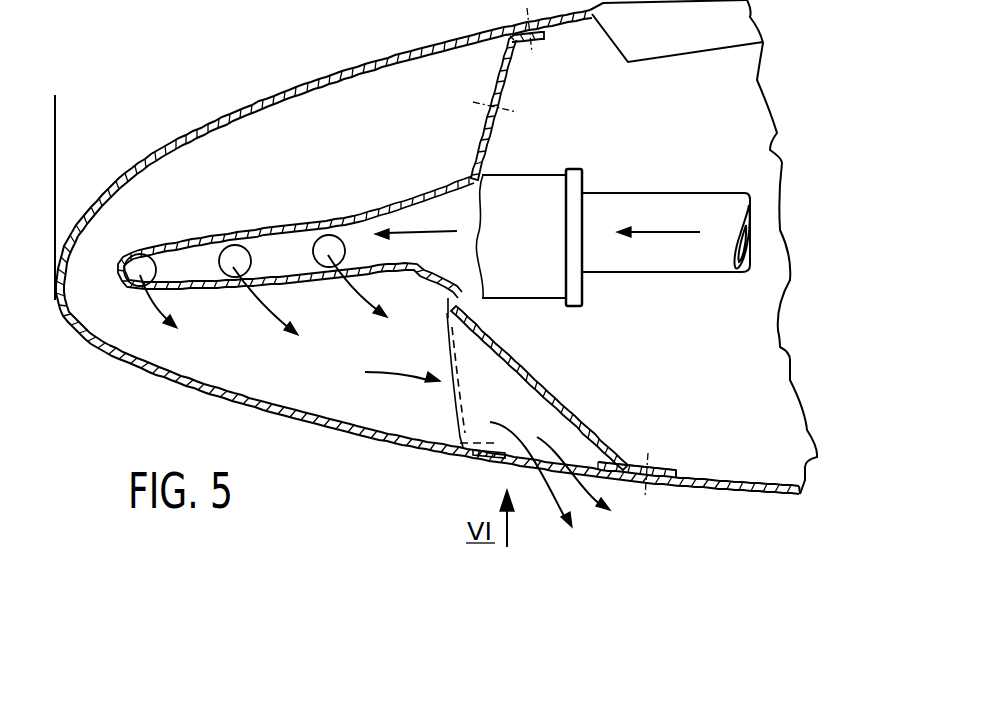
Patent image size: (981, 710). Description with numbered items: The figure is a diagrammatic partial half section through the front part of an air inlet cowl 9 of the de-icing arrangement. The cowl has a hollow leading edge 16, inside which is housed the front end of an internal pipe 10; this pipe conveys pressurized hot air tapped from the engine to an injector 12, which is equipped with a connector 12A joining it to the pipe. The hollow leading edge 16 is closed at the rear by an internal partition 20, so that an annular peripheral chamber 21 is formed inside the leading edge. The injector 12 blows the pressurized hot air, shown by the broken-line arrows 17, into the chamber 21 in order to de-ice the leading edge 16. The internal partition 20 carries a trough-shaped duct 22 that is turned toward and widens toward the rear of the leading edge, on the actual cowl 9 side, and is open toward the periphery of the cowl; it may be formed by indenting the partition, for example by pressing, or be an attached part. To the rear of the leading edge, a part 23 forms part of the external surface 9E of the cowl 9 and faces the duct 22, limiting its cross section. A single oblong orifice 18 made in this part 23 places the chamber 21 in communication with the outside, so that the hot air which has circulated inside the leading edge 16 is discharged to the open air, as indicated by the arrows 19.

The air inlet cowl 9 is at (727, 488).
The external surface 9E is at (770, 503).
The internal pipe 10 is at (695, 258).
The injector 12 is at (410, 220).
The connector 12A is at (537, 190).
The hollow leading edge 16 is at (133, 170).
The broken-line arrows 17 is at (253, 307).
The single oblong orifice 18 is at (505, 457).
The arrows 19 is at (540, 437).
The internal partition 20 is at (487, 87).
The annular peripheral chamber 21 is at (230, 142).
The trough-shaped duct 22 is at (488, 382).
The part 23 is at (685, 473).